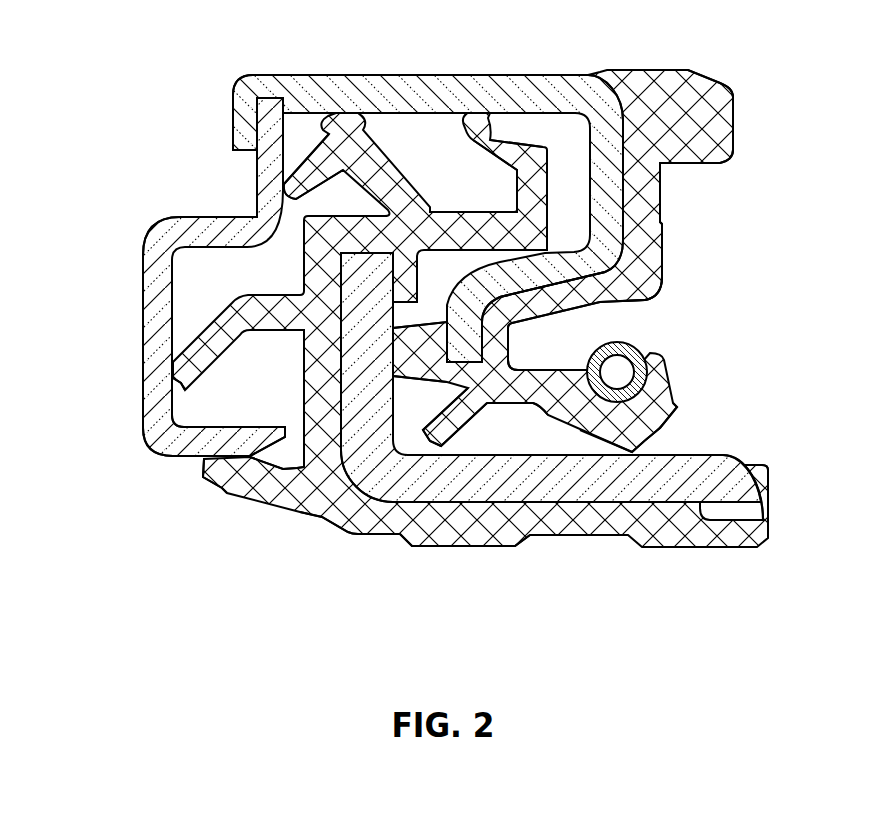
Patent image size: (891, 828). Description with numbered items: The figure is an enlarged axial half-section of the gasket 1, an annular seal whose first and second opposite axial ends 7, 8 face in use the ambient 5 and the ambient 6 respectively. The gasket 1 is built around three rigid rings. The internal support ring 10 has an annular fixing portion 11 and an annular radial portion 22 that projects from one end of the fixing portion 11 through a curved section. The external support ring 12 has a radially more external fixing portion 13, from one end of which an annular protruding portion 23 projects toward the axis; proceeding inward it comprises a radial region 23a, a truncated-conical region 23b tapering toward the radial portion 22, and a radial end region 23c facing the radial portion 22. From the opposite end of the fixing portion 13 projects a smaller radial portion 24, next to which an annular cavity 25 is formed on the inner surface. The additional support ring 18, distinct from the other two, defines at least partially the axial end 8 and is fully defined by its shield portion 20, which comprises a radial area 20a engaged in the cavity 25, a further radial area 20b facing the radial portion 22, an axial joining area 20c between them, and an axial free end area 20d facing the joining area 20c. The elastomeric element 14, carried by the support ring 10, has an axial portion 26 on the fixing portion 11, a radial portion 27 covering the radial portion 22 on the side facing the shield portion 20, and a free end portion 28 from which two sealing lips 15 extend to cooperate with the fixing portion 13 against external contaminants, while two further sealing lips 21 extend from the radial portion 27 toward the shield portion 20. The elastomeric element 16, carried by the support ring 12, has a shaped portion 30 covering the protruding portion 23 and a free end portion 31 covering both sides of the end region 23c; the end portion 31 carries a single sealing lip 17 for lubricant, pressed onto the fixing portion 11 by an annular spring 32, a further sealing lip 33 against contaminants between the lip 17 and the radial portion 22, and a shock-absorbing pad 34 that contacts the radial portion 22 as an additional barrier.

The gasket 1 is at (797, 88).
The ambient 5 is at (748, 316).
The ambient 6 is at (91, 253).
The first axial end 7 is at (769, 485).
The second axial end 8 is at (143, 430).
The internal support ring 10 is at (583, 488).
The fixing portion 11 is at (535, 482).
The external support ring 12 is at (418, 95).
The fixing portion 13 is at (374, 100).
The elastomeric element 14 is at (673, 526).
The sealing lips 15 is at (343, 128).
The elastomeric element 16 is at (646, 96).
The sealing lip 17 is at (627, 443).
The additional support ring 18 is at (156, 222).
The shield portion 20 is at (162, 330).
The radial area 20a is at (257, 107).
The further radial area 20b is at (170, 353).
The joining area 20c is at (200, 225).
The free end area 20d is at (195, 455).
The further sealing lips 21 is at (180, 370).
The radial portion 22 is at (362, 318).
The protruding portion 23 is at (605, 232).
The radial region 23a is at (615, 193).
The truncated-conical region 23b is at (580, 287).
The radial end region 23c is at (443, 374).
The radial portion 24 is at (243, 130).
The annular cavity 25 is at (266, 93).
The axial portion 26 is at (441, 542).
The radial portion 27 is at (320, 387).
The free end portion 28 is at (463, 227).
The shaped portion 30 is at (640, 278).
The free end portion 31 is at (550, 390).
The annular spring 32 is at (623, 343).
The sealing lip 33 is at (444, 446).
The shock-absorbing pad 34 is at (311, 450).